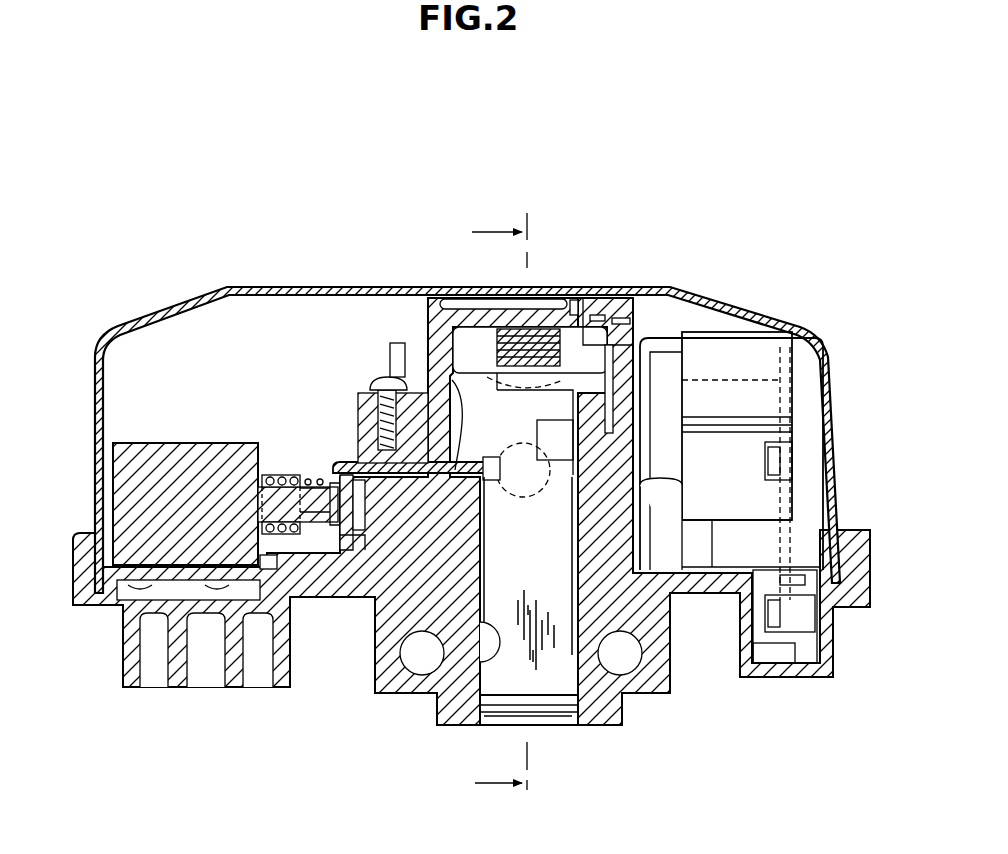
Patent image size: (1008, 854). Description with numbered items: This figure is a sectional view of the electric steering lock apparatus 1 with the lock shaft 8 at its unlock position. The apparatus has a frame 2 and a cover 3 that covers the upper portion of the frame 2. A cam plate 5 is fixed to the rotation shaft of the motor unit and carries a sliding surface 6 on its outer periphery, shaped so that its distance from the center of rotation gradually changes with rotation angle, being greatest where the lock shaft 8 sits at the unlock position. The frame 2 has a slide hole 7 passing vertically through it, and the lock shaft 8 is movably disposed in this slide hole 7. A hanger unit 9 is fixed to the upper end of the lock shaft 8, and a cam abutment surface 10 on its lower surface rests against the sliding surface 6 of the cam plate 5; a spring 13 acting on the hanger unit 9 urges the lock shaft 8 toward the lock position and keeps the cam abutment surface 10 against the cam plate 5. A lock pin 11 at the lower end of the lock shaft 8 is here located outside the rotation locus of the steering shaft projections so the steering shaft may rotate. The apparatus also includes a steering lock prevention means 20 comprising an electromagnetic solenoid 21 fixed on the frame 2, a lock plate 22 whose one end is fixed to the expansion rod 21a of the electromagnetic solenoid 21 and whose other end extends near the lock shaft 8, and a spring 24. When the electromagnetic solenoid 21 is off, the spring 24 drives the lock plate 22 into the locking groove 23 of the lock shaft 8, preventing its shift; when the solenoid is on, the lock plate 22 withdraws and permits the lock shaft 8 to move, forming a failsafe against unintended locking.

The electric steering lock apparatus 1 is at (450, 491).
The frame 2 is at (665, 630).
The cover 3 is at (742, 306).
The cam plate 5 is at (540, 507).
The sliding surface 6 is at (390, 378).
The slide hole 7 is at (495, 650).
The lock shaft 8 is at (575, 665).
The hanger unit 9 is at (470, 345).
The cam abutment surface 10 is at (615, 320).
The lock pin 11 is at (540, 705).
The spring 13 is at (573, 305).
The steering lock prevention means 20 is at (185, 453).
The electromagnetic solenoid 21 is at (120, 468).
The expansion rod 21a is at (300, 475).
The lock plate 22 is at (337, 462).
The locking groove 23 is at (494, 505).
The spring 24 is at (308, 530).